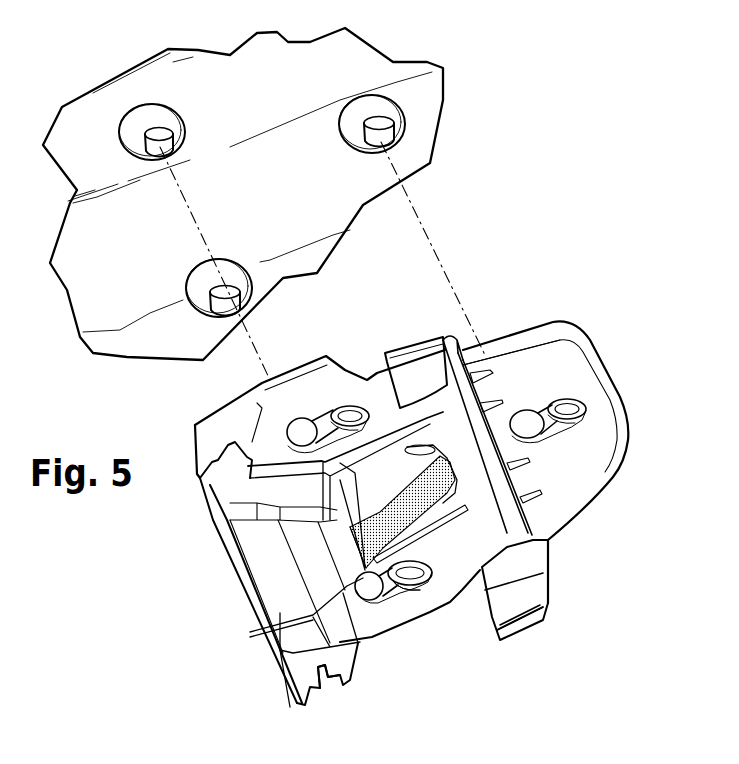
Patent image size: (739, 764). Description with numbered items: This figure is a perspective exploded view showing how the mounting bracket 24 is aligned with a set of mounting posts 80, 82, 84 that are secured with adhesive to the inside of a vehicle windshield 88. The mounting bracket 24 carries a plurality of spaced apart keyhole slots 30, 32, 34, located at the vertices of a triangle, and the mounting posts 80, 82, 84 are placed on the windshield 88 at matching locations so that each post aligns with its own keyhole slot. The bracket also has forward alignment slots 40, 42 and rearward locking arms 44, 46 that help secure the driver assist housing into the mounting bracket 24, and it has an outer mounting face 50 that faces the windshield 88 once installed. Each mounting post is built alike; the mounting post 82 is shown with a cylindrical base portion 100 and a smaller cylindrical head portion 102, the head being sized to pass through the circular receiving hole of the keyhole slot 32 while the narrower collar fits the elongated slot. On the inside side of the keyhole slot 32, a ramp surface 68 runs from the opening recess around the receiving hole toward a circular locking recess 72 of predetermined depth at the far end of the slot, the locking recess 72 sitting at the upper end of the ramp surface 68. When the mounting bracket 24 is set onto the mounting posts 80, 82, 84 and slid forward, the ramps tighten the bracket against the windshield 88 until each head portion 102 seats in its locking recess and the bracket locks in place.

The mounting bracket 24 is at (590, 336).
The keyhole slot 30 is at (577, 417).
The keyhole slot 32 is at (367, 612).
The keyhole slot 34 is at (315, 406).
The forward alignment slot 40 is at (333, 690).
The forward alignment slot 42 is at (232, 462).
The rearward locking arm 44 is at (527, 623).
The rearward locking arm 46 is at (423, 353).
The outer mounting face 50 is at (470, 530).
The ramp surface 68 is at (362, 576).
The locking recess 72 is at (428, 582).
The mounting post 80 is at (403, 105).
The mounting post 82 is at (187, 271).
The mounting post 84 is at (182, 117).
The windshield 88 is at (312, 70).
The base portion 100 is at (232, 275).
The head portion 102 is at (233, 305).